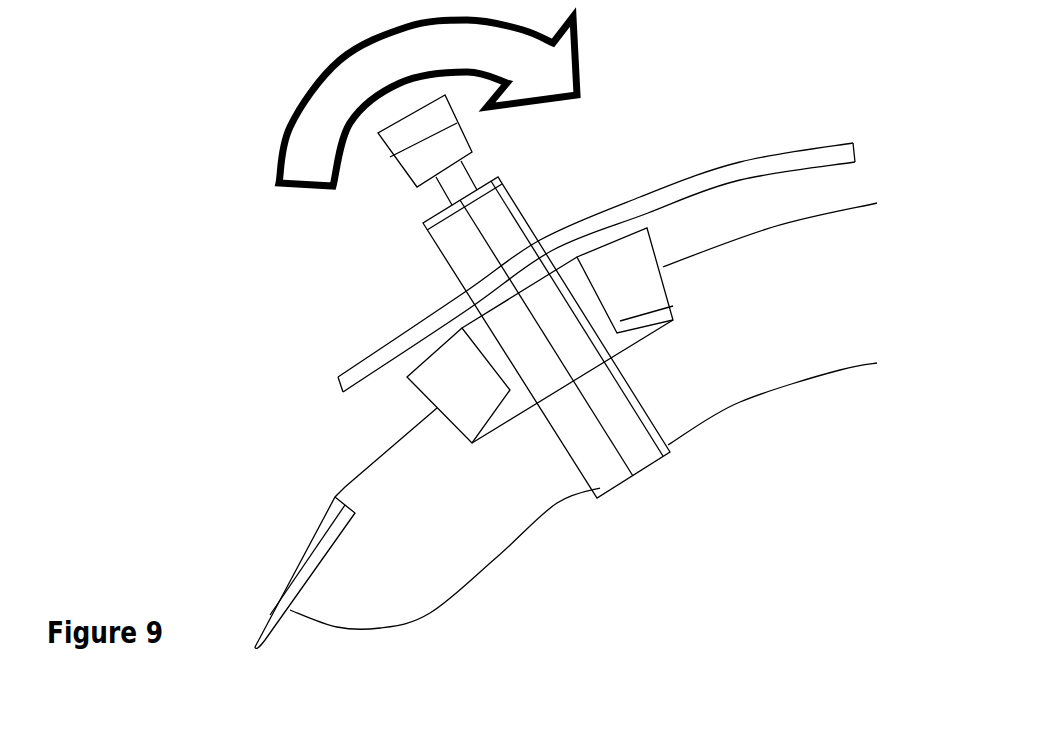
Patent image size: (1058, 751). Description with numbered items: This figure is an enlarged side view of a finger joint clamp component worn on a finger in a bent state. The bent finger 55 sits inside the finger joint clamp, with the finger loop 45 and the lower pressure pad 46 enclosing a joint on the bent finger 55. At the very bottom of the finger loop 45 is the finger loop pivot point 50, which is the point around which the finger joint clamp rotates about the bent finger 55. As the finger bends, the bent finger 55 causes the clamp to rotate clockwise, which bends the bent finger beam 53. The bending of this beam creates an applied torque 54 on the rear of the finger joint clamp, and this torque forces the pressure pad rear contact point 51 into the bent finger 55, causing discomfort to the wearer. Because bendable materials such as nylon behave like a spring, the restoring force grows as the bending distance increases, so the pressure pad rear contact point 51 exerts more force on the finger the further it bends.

The finger loop 45 is at (524, 360).
The lower pressure pad 46 is at (483, 350).
The finger loop pivot point 50 is at (590, 386).
The pressure pad rear contact point 51 is at (713, 355).
The bent finger beam 53 is at (607, 243).
The applied torque 54 is at (372, 101).
The bent finger 55 is at (406, 528).